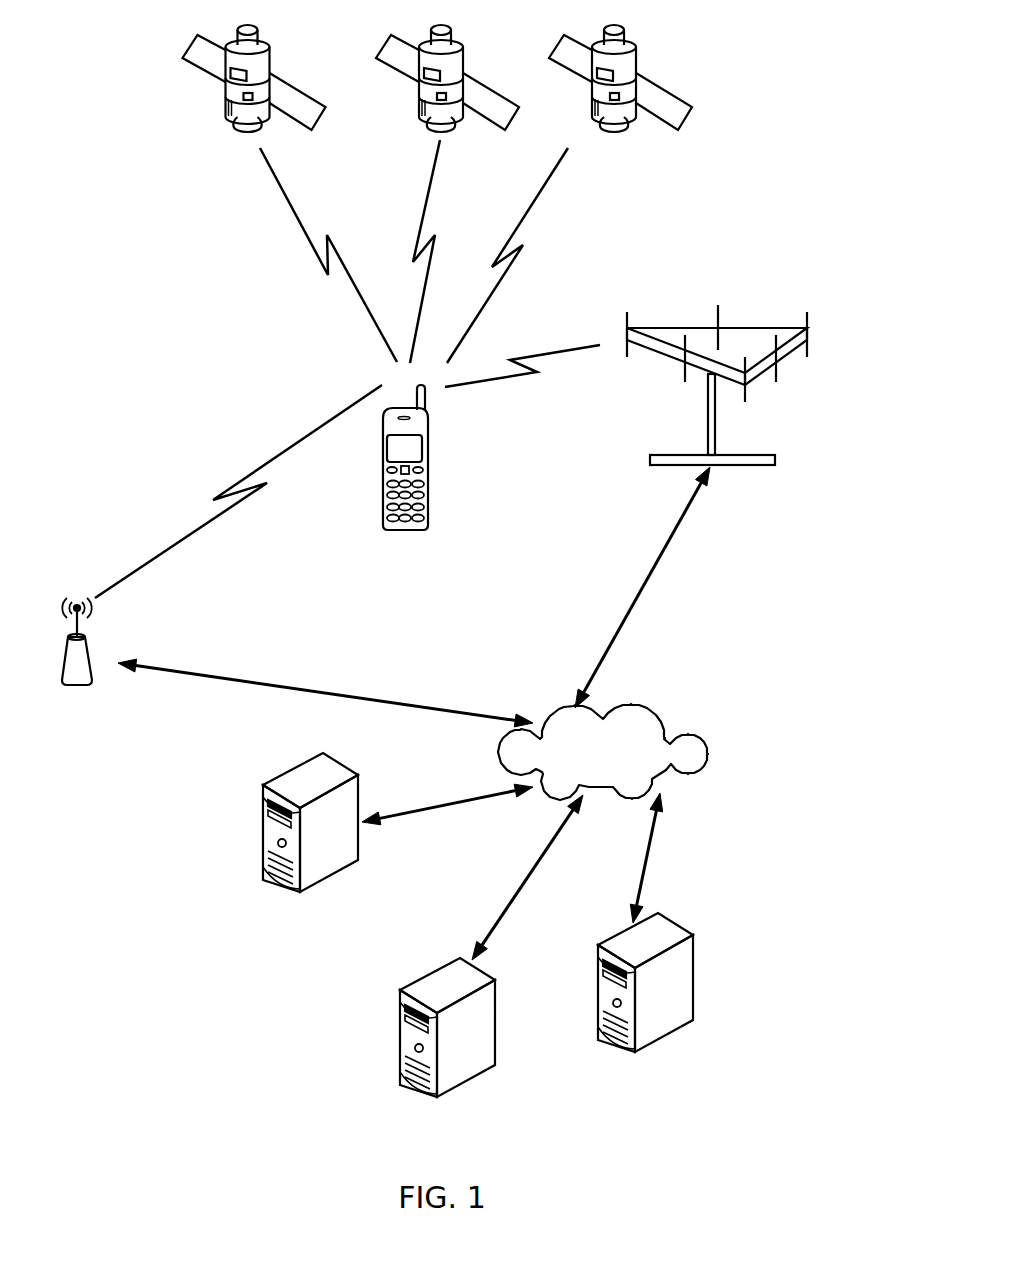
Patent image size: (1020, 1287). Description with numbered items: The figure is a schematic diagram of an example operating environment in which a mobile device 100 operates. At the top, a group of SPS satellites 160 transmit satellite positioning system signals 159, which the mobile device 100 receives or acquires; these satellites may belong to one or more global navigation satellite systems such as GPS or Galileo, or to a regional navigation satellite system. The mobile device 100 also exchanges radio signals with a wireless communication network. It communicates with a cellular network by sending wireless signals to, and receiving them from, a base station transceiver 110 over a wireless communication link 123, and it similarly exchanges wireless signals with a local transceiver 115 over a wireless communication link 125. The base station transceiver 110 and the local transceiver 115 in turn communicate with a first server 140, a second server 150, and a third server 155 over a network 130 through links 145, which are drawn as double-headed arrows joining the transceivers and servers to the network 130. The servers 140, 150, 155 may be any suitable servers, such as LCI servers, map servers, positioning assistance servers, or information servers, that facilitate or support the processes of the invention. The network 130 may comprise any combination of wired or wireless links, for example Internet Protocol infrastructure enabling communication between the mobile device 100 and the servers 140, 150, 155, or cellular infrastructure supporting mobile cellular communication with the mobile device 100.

The mobile device 100 is at (383, 466).
The base station transceiver 110 is at (747, 467).
The local transceiver 115 is at (80, 688).
The wireless communication link 123 is at (492, 381).
The wireless communication link 125 is at (165, 553).
The network 130 is at (690, 731).
The server 140 is at (342, 760).
The links 145 is at (283, 690).
The server 150 is at (693, 935).
The server 155 is at (497, 980).
The satellite positioning system signals 159 is at (289, 199).
The SPS satellites 160 is at (166, 92).